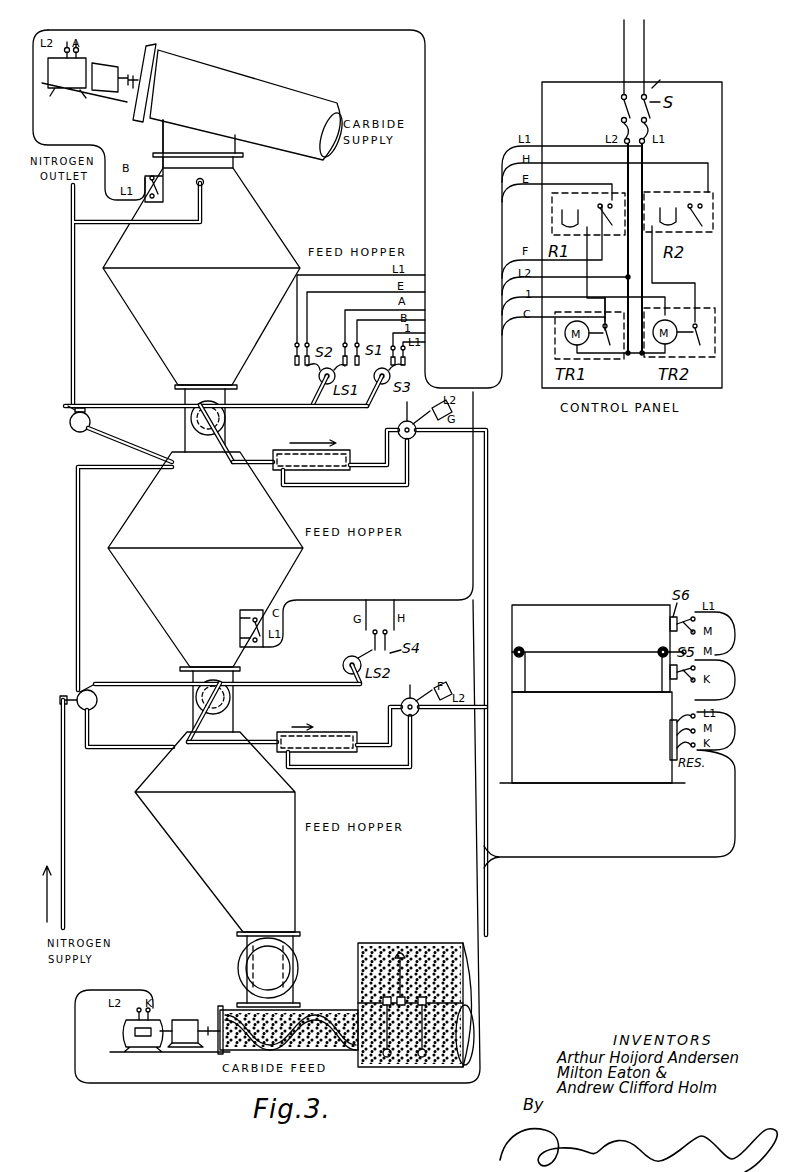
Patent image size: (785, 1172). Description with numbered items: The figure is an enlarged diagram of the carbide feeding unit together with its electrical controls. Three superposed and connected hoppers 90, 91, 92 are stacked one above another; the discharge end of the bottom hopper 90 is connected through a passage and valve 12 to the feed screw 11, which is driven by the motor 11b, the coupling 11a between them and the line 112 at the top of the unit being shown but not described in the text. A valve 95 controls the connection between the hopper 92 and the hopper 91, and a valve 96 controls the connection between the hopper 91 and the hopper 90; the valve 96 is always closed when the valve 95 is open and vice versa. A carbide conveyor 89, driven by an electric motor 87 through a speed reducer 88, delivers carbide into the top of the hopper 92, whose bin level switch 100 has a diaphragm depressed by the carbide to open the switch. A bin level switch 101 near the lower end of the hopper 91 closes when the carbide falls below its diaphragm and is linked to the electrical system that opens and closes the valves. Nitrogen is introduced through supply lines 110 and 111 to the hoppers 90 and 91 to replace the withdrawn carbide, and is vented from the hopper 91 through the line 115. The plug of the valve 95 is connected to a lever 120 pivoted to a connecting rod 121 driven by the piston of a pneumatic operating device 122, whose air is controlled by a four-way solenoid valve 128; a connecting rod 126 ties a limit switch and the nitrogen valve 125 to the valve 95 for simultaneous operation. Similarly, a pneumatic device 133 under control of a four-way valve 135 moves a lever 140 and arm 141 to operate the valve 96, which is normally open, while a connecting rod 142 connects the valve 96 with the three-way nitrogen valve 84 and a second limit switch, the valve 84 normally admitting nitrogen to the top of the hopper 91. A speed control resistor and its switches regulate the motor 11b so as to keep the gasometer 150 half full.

The electric motor 87 is at (80, 62).
The speed reducer 88 is at (112, 72).
The carbide conveyor 89 is at (262, 80).
The bin level switch 100 is at (146, 172).
The nitrogen outlet pipe 112 is at (99, 226).
The hopper 92 is at (137, 320).
The connecting rod 126 is at (120, 403).
The valve 125 is at (82, 437).
The line 115 is at (138, 443).
The supply line 111 is at (115, 471).
The valve 95 is at (227, 419).
The lever 120 is at (233, 433).
The connecting rod 121 is at (251, 462).
The pneumatic operating device 122 is at (350, 447).
The four-way solenoid valve 128 is at (413, 436).
The bin level switch 101 is at (280, 604).
The hopper 91 is at (160, 607).
The valve 96 is at (232, 700).
The three-way nitrogen valve 84 is at (91, 688).
The connecting rod 142 is at (295, 687).
The lever 140 is at (193, 722).
The arm 141 is at (246, 736).
The pneumatic device 133 is at (347, 733).
The four-way pneumatic valve 135 is at (418, 719).
The supply line 110 is at (120, 747).
The hopper 90 is at (202, 872).
The valve 12 is at (293, 960).
The feed screw 11 is at (322, 1008).
The gear reducer 11a is at (188, 1018).
The motor 11b is at (143, 1047).
The gasometer 150 is at (578, 784).